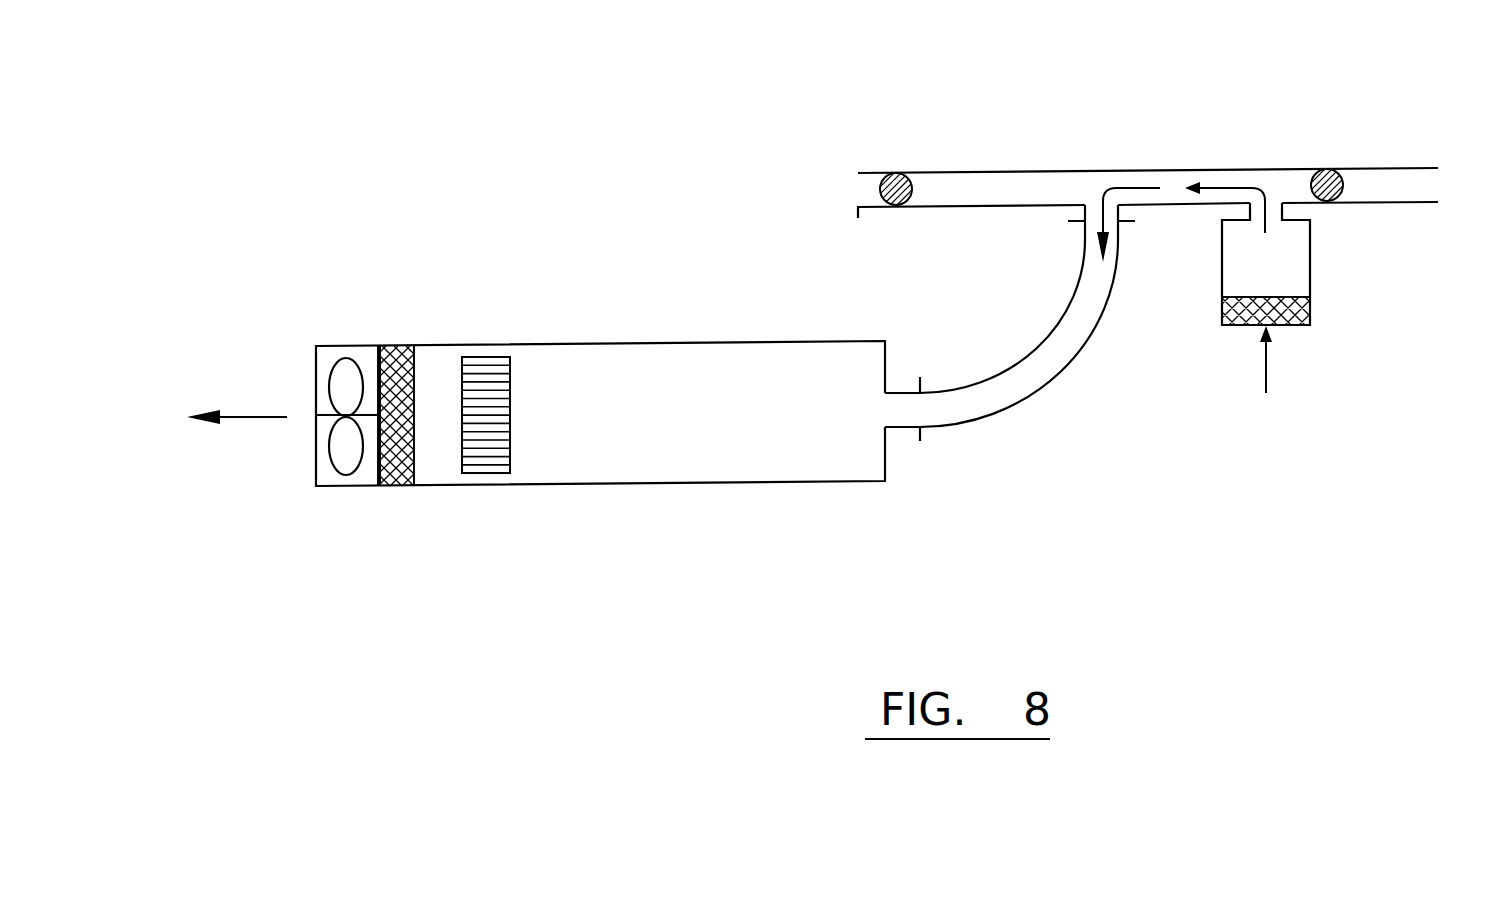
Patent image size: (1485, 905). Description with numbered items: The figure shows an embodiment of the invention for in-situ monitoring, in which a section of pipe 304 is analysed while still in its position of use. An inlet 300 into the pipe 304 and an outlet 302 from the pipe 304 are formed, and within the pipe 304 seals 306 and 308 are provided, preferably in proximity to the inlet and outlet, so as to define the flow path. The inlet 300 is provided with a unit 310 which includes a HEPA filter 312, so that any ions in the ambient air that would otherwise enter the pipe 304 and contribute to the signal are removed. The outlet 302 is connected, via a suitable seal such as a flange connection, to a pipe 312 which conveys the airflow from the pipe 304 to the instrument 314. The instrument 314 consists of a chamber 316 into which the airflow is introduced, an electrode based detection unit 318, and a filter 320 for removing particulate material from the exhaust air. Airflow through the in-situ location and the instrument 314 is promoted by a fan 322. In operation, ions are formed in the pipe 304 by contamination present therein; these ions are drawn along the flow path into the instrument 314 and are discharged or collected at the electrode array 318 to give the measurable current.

The inlet 300 is at (1287, 211).
The outlet 302 is at (1080, 213).
The pipe 304 is at (1000, 173).
The seal 306 is at (1334, 172).
The seal 308 is at (895, 173).
The unit 310 is at (1330, 285).
The HEPA filter / pipe 312 is at (1283, 322).
The instrument 314 is at (536, 420).
The chamber 316 is at (710, 340).
The electrode based detection unit 318 is at (485, 458).
The filter 320 is at (407, 350).
The fan 322 is at (345, 373).